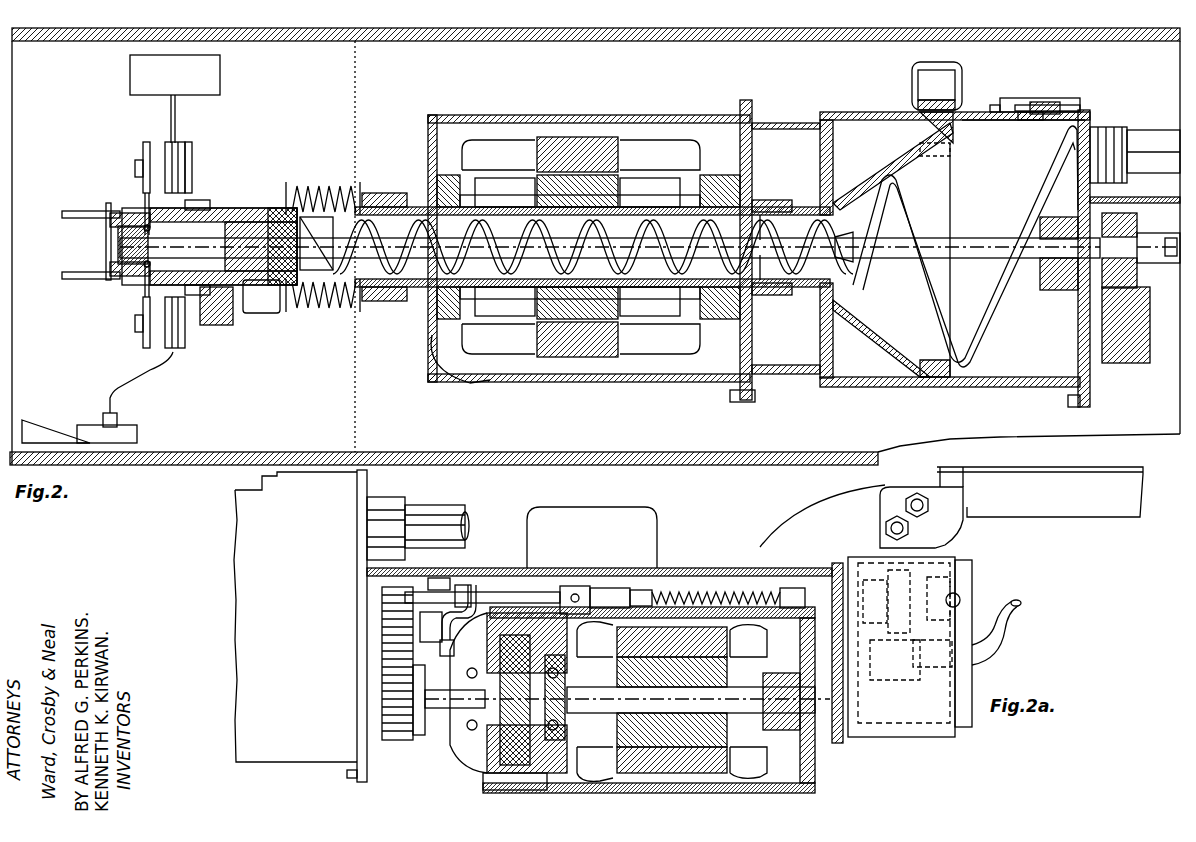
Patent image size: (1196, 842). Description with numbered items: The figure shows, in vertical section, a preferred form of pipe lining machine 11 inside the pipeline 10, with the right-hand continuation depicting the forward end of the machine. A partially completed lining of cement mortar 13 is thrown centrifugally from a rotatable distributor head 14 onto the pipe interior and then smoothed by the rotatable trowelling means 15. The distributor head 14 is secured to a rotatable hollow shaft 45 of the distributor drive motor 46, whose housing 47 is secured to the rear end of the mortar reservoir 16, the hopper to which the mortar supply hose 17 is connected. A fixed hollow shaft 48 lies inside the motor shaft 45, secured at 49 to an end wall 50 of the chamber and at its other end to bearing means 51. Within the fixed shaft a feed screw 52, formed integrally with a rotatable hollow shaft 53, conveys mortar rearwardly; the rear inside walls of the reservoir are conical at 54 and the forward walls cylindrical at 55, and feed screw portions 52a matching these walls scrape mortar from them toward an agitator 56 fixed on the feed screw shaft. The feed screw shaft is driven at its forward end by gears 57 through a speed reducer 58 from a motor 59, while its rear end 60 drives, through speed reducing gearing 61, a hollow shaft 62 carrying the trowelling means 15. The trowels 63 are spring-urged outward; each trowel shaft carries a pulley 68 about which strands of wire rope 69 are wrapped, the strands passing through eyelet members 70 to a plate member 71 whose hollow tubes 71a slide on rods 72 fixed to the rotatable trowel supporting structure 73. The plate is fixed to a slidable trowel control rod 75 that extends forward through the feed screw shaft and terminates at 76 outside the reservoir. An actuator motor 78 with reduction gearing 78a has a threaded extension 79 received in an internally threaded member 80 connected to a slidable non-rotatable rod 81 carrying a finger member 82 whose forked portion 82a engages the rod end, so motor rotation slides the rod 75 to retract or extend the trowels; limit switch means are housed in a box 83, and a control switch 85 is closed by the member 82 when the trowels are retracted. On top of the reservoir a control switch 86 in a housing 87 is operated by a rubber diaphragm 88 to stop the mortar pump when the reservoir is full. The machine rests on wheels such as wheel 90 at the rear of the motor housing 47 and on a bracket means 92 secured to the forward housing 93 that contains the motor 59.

In FIG. 2, the pipeline 10 is at (476, 42).
In FIG. 2, the lining machine 11 is at (672, 115).
In FIG. 2, the lining of cement mortar 13 is at (60, 42).
In FIG. 2, the rotatable distributor head 14 is at (320, 184).
In FIG. 2, the rotatable trowelling means 15 is at (140, 425).
In FIG. 2, the mortar receiving hopper portion 16 is at (968, 120).
In FIG. 2A, the mortar receiving hopper portion 16 is at (240, 526).
In FIG. 2A, the mortar supply hose 17 is at (440, 508).
In FIG. 2, the rotatable hollow shaft 45 is at (366, 210).
In FIG. 2, the distributor drive motor 46 is at (592, 150).
In FIG. 2, the motor housing 47 is at (570, 120).
In FIG. 2, the fixed hollow shaft 48 is at (380, 302).
In FIG. 2, the securing point of fixed shaft 49 is at (808, 210).
In FIG. 2, the end wall 50 is at (822, 147).
In FIG. 2, the bearing means 51 is at (284, 212).
In FIG. 2, the feed screw 52 is at (555, 265).
In FIG. 2, the feed screw portions 52a is at (938, 283).
In FIG. 2, the rotatable hollow shaft 53 is at (615, 255).
In FIG. 2, the conical inside walls 54 is at (895, 170).
In FIG. 2, the cylindrical inside walls 55 is at (988, 122).
In FIG. 2, the agitator 56 is at (290, 305).
In FIG. 2, the gears 57 is at (1090, 298).
In FIG. 2A, the gears 57 is at (380, 662).
In FIG. 2A, the speed reducer 58 is at (480, 752).
In FIG. 2A, the motor 59 is at (652, 790).
In FIG. 2, the rear end of feed screw shaft 60 is at (222, 243).
In FIG. 2, the speed reducing gearing 61 is at (204, 300).
In FIG. 2, the hollow shaft 62 is at (190, 228).
In FIG. 2, the trowels 63 is at (212, 74).
In FIG. 2, the pulley 68 is at (143, 148).
In FIG. 2, the strands of wire rope 69 is at (145, 190).
In FIG. 2, the eyelet members 70 is at (147, 226).
In FIG. 2, the plate member 71 is at (104, 228).
In FIG. 2, the hollow tubes 71a is at (122, 210).
In FIG. 2, the rods 72 is at (78, 212).
In FIG. 2, the rotatable trowel supporting structure 73 is at (186, 152).
In FIG. 2, the slidable trowel control rod 75 is at (100, 242).
In FIG. 2A, the slidable trowel control rod 75 is at (428, 630).
In FIG. 2, the forward end of control rod 76 is at (1170, 260).
In FIG. 2A, the forward end of control rod 76 is at (440, 660).
In FIG. 2A, the actuator motor 78 is at (955, 595).
In FIG. 2A, the reduction gearing 78a is at (935, 560).
In FIG. 2A, the threaded extension 79 is at (676, 592).
In FIG. 2A, the internally threaded member 80 is at (703, 592).
In FIG. 2A, the slidable non-rotatable rod 81 is at (505, 590).
In FIG. 2A, the finger member 82 is at (480, 588).
In FIG. 2A, the forked portion 82a is at (452, 650).
In FIG. 2A, the box 83 is at (900, 685).
In FIG. 2A, the control switch 85 is at (453, 562).
In FIG. 2, the control switch 86 is at (1042, 102).
In FIG. 2, the housing 87 is at (1017, 98).
In FIG. 2, the disc or rubber diaphragm 88 is at (1030, 122).
In FIG. 2, the wheel 90 is at (462, 384).
In FIG. 2A, the bracket means 92 is at (885, 490).
In FIG. 2A, the housing 93 is at (728, 572).